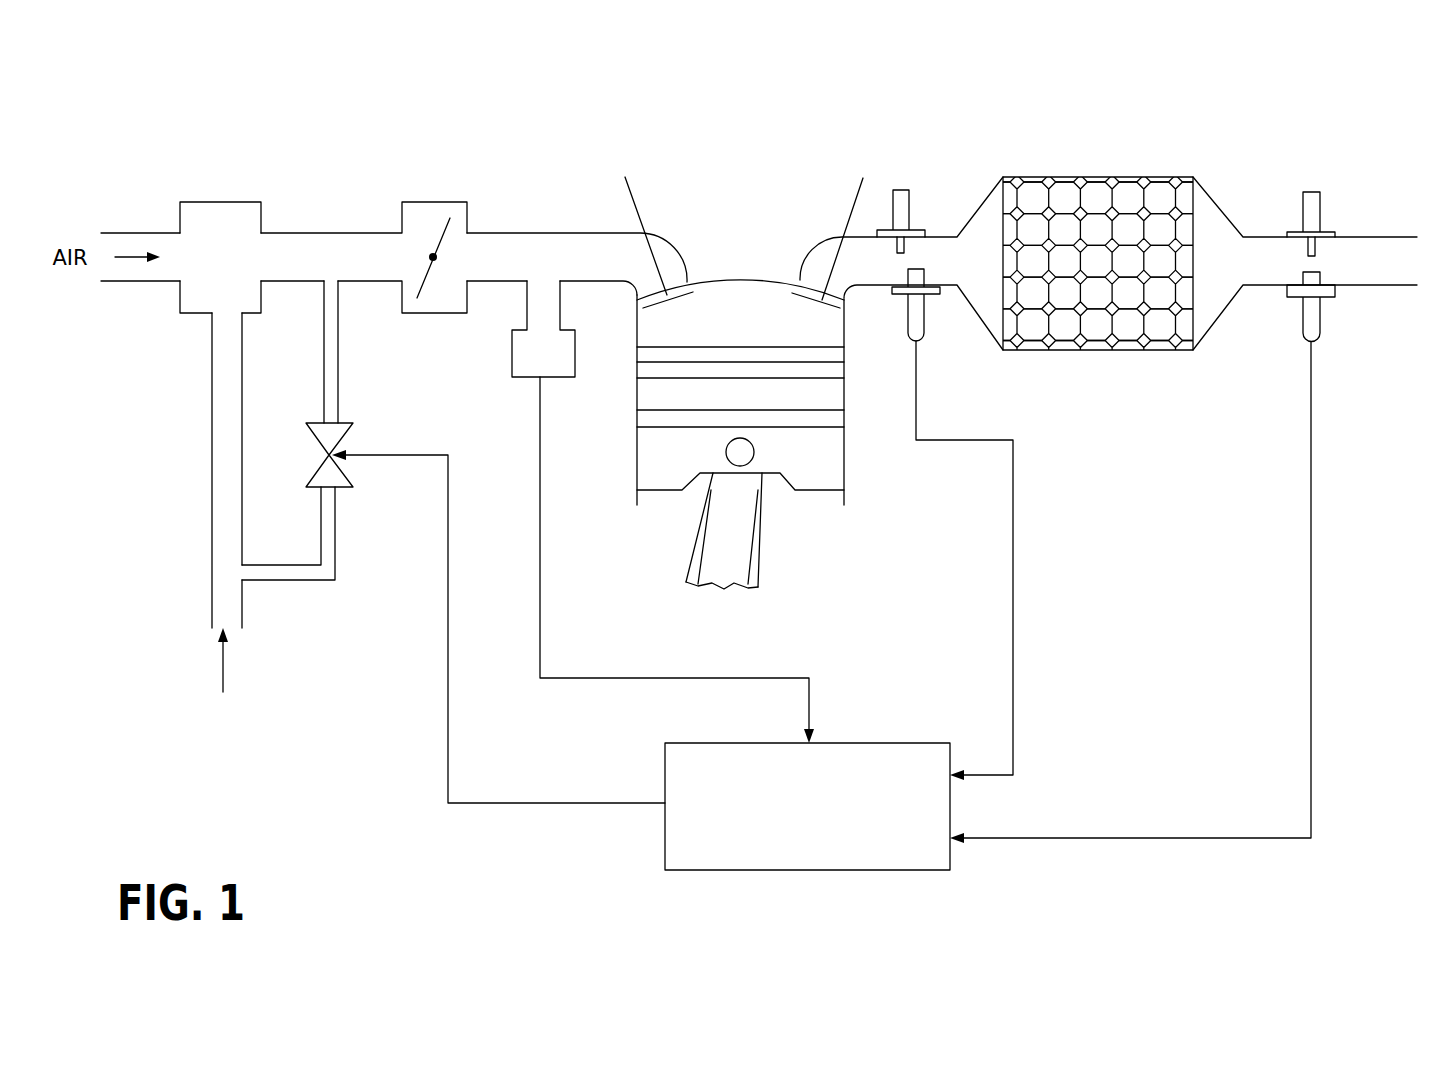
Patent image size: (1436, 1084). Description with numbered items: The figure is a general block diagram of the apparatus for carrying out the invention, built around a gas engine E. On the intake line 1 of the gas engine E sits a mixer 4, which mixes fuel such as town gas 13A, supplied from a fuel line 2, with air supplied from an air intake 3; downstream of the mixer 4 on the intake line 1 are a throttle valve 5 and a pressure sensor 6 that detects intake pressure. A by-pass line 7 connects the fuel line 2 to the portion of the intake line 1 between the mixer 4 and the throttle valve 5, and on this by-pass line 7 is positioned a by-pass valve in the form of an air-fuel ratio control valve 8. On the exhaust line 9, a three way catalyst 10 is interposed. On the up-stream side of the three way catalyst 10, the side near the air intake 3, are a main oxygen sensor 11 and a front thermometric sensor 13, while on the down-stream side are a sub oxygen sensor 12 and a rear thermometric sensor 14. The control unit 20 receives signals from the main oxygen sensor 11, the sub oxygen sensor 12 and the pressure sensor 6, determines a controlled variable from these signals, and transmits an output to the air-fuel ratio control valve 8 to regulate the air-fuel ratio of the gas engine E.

The intake line 1 is at (559, 233).
The fuel line 2 is at (224, 500).
The air intake 3 is at (147, 236).
The mixer 4 is at (248, 200).
The throttle valve 5 is at (450, 200).
The pressure sensor 6 is at (556, 377).
The by-pass line 7 is at (300, 578).
The air-fuel ratio control valve 8 is at (350, 425).
The exhaust line 9 is at (862, 236).
The three way catalyst 10 is at (1063, 176).
The main oxygen sensor 11 is at (922, 317).
The sub oxygen sensor 12 is at (1322, 320).
The front thermometric sensor 13 is at (913, 205).
The town gas 13A is at (221, 678).
The rear thermometric sensor 14 is at (1315, 203).
The control unit 20 is at (792, 869).
The gas engine E is at (728, 258).